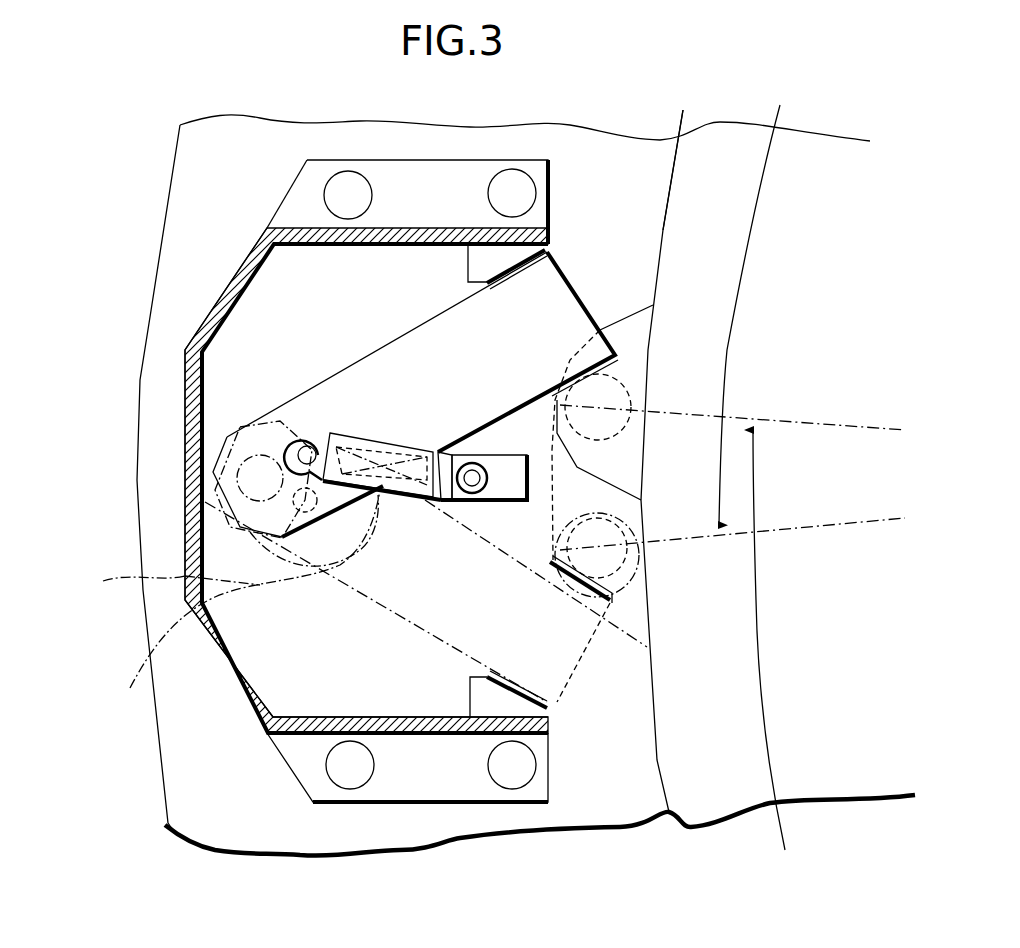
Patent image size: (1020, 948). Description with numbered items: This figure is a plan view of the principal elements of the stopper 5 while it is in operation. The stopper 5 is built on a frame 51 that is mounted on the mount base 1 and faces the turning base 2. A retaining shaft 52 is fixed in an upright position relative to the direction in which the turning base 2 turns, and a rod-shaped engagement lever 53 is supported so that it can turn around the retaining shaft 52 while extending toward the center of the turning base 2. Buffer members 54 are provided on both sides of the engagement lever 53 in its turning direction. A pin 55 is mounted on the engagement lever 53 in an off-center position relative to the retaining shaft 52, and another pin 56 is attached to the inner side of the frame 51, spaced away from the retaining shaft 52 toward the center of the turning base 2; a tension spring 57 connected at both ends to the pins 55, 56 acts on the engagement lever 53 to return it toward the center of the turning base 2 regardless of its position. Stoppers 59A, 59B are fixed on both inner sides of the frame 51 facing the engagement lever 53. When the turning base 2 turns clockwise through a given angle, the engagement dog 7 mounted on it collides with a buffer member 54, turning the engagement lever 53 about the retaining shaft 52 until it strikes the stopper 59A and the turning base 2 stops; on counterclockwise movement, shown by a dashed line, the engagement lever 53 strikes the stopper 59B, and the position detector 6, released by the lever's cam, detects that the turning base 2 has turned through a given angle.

The mount base 1 is at (165, 210).
The turning base 2 is at (661, 768).
The stopper 5 is at (205, 326).
The position detector 6 is at (508, 483).
The engagement dog 7 is at (640, 576).
The frame 51 is at (185, 411).
The retaining shaft 52 is at (245, 497).
The engagement lever 53 is at (127, 584).
The buffer members 54 is at (465, 672).
The pin 55 is at (300, 505).
The pin 56 is at (475, 465).
The tension spring 57 is at (266, 571).
The stopper 59A is at (520, 274).
The stopper 59B is at (480, 712).